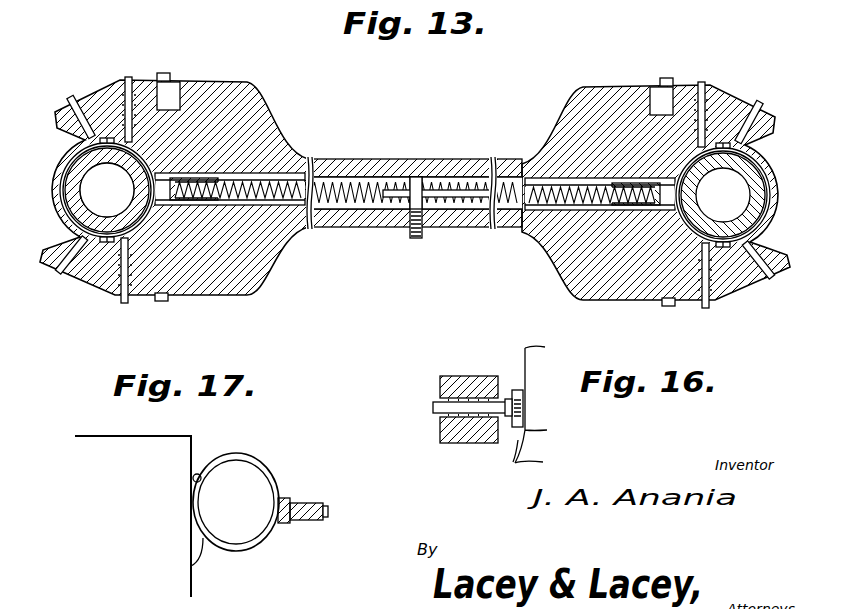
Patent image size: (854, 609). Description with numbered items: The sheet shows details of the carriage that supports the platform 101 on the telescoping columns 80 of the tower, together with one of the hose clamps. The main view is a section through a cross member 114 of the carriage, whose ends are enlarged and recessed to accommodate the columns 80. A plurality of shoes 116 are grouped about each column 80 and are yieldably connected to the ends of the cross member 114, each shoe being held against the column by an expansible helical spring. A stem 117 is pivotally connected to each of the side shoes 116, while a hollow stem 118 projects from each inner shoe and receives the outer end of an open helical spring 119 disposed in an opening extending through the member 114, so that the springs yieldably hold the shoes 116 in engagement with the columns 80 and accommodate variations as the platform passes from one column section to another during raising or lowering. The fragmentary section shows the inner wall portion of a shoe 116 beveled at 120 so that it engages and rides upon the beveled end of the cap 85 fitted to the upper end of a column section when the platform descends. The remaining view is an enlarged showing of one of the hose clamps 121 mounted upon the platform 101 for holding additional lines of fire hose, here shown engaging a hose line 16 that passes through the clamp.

In FIG. 13, the pipe 16 is at (60, 292).
In FIG. 13, the column 80 is at (70, 190).
In FIG. 16, the column 80 is at (531, 394).
In FIG. 16, the cap 85 is at (515, 460).
In FIG. 17, the platform 101 is at (136, 445).
In FIG. 13, the cross member 114 is at (470, 160).
In FIG. 16, the cross member 114 is at (452, 377).
In FIG. 13, the shoe 116 is at (74, 222).
In FIG. 16, the shoe 116 is at (520, 390).
In FIG. 13, the stem 117 is at (125, 303).
In FIG. 16, the stem 117 is at (435, 408).
In FIG. 13, the hollow stem 118 is at (217, 207).
In FIG. 13, the open helical spring 119 is at (340, 185).
In FIG. 16, the beveled inner wall portion 120 is at (527, 409).
In FIG. 17, the hose clamp 121 is at (270, 478).